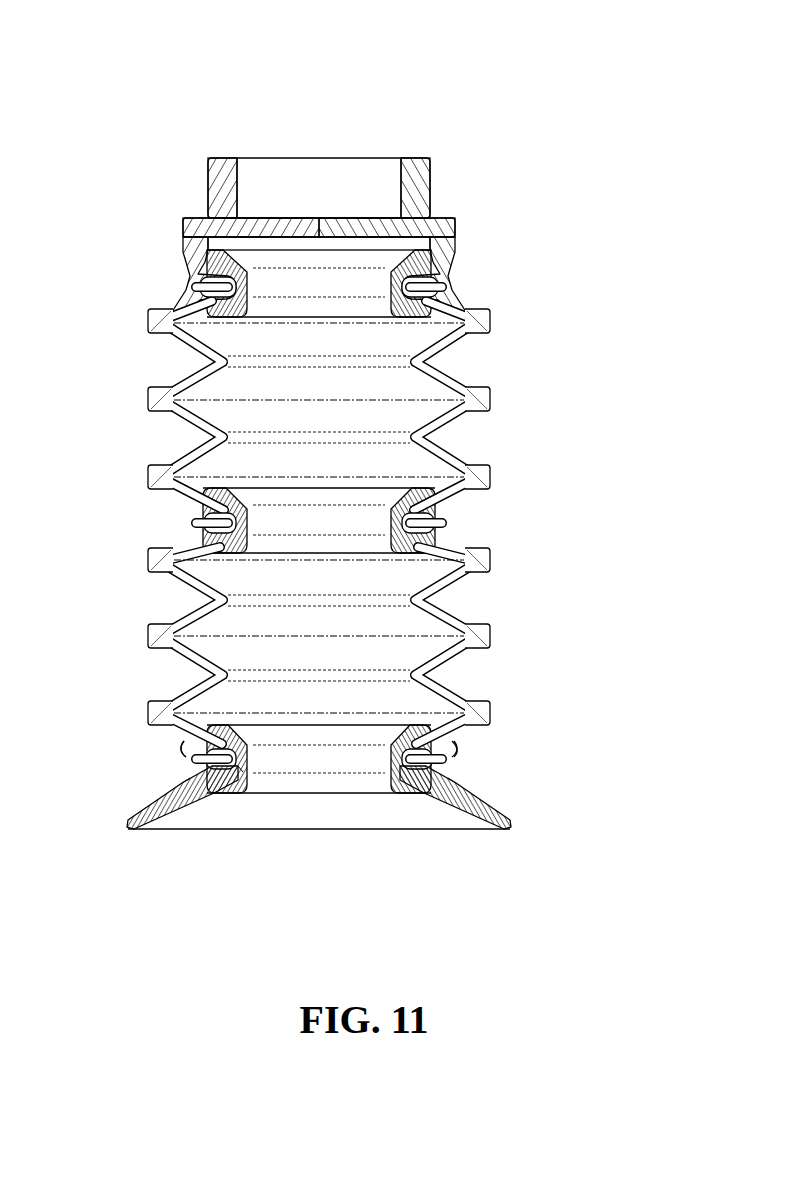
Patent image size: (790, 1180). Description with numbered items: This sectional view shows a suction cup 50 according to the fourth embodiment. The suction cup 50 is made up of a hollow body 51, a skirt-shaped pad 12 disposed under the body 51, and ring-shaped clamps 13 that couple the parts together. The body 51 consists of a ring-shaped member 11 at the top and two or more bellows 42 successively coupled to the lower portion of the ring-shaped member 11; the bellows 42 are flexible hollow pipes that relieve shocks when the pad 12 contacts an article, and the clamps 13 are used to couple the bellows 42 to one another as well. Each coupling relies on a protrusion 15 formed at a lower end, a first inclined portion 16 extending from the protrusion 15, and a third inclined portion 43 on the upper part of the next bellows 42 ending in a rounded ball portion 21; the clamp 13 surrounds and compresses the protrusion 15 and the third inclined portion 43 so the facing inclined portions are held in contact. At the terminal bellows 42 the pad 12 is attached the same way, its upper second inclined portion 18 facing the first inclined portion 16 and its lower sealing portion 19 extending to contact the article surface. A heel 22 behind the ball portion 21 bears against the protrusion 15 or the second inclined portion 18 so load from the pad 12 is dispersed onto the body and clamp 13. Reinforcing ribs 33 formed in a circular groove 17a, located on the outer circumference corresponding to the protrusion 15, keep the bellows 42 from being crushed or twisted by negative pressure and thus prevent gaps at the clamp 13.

The suction cup 50 is at (378, 108).
The ring-shaped member 11 is at (455, 238).
The pad 12 is at (522, 806).
The clamp 13 is at (258, 305).
The protrusion 15 is at (228, 736).
The first inclined portion 16 is at (200, 283).
The circular groove 17a is at (472, 742).
The second inclined portion 18 is at (190, 764).
The sealing portion 19 is at (146, 811).
The ball portion 21 is at (243, 772).
The heel 22 is at (190, 748).
The reinforcing ribs 33 is at (456, 758).
The bellows 42 is at (499, 405).
The third inclined portion 43 is at (192, 286).
The hollow body 51 is at (604, 292).